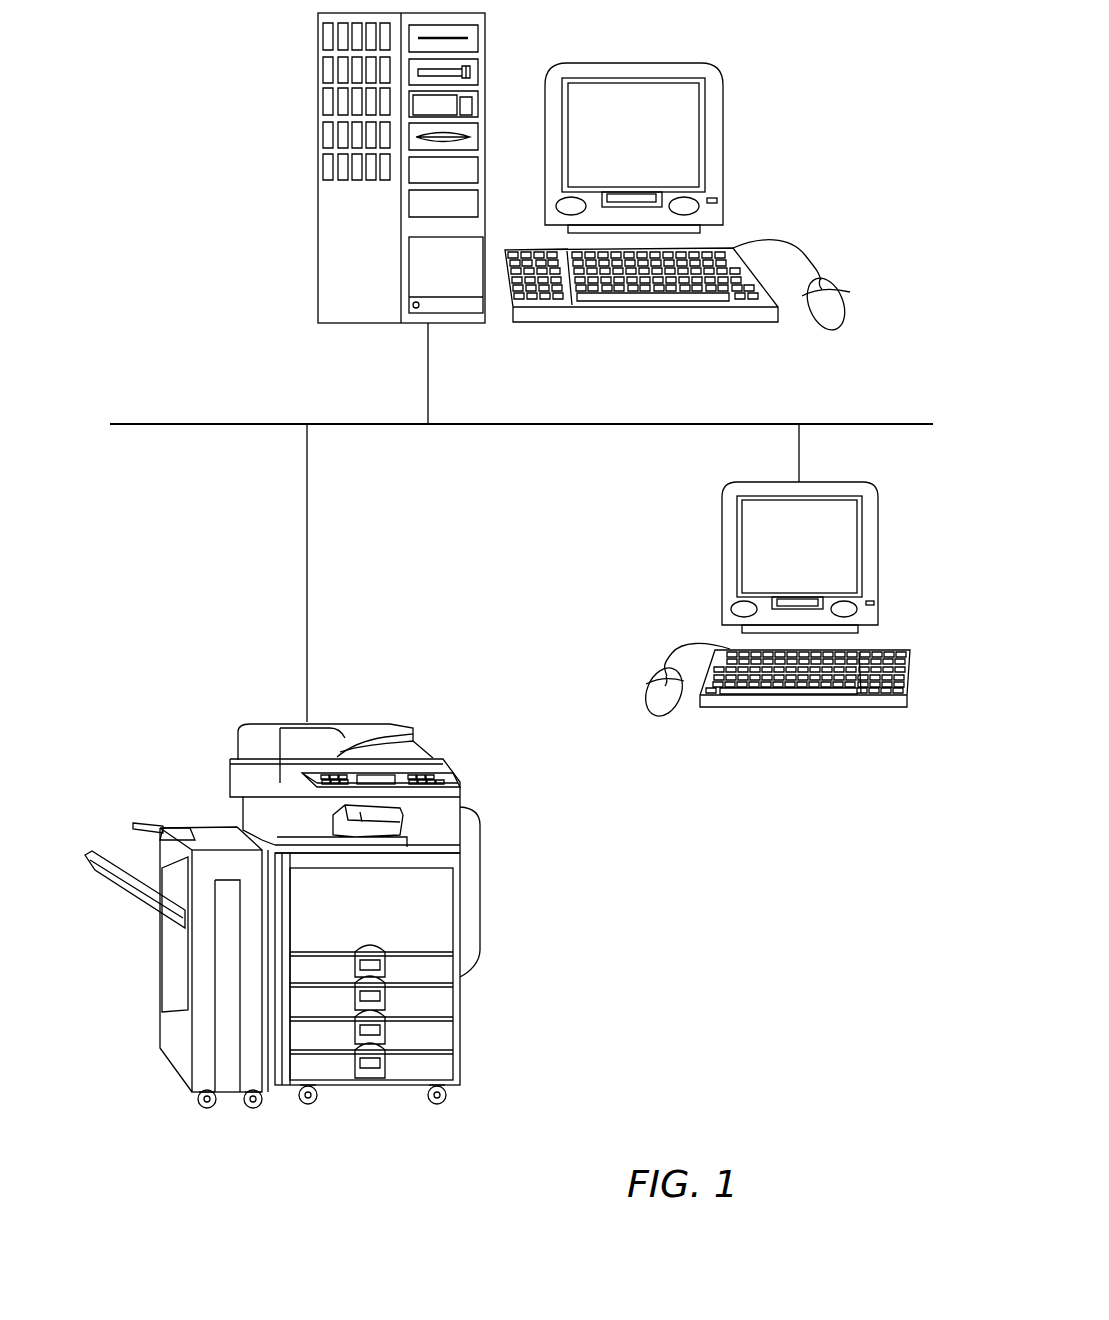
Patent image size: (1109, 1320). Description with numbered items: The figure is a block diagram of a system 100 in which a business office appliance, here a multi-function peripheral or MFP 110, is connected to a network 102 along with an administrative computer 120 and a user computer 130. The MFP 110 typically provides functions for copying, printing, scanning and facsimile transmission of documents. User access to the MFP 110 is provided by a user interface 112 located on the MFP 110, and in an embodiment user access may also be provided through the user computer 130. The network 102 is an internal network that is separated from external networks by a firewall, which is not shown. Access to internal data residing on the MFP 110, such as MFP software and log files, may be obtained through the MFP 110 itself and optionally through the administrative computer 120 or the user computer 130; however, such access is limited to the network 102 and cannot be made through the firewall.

The system 100 is at (897, 95).
The network 102 is at (573, 425).
The MFP 110 is at (363, 722).
The user interface 112 is at (433, 760).
The administrative computer 120 is at (318, 164).
The user computer 130 is at (772, 708).